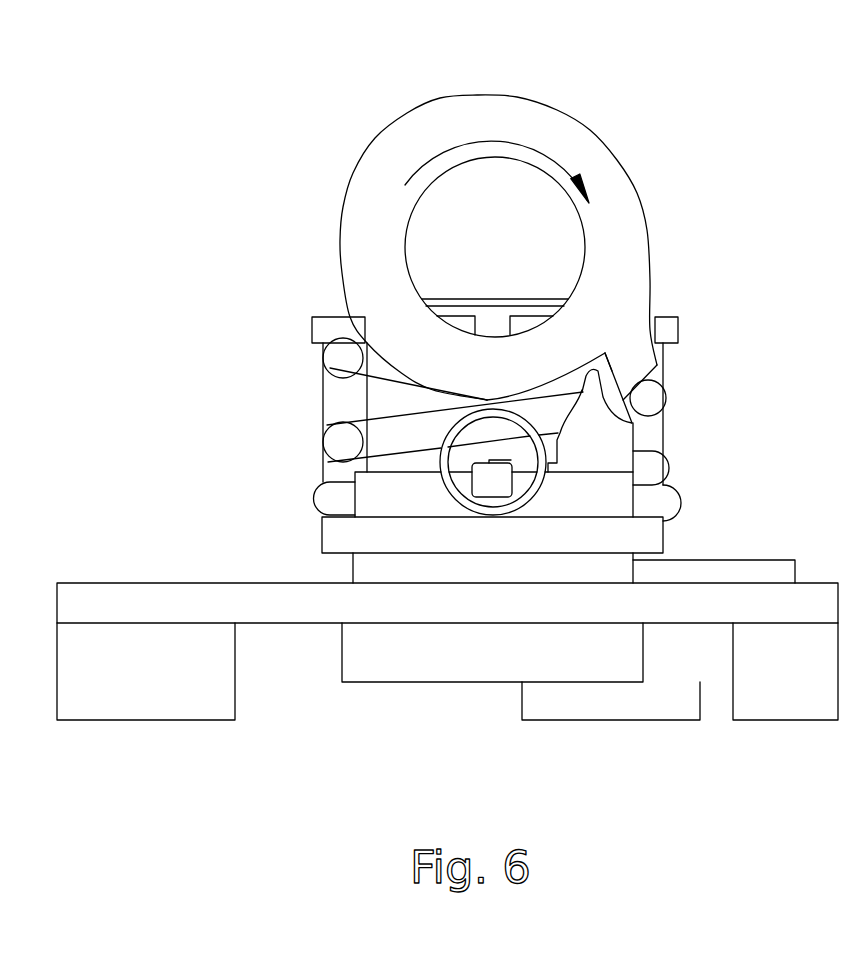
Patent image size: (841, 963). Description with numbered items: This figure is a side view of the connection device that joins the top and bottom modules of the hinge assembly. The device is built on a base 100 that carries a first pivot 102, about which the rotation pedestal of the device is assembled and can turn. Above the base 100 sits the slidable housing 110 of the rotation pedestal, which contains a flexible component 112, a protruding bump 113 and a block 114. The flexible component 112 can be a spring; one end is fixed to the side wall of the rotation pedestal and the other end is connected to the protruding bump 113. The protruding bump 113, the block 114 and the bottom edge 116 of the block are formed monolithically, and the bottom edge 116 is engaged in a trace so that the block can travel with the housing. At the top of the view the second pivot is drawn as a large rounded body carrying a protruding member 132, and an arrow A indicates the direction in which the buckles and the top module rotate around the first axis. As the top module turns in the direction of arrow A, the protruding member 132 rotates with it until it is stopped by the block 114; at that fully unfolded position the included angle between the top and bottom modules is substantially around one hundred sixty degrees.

The arrow A is at (500, 142).
The base 100 is at (432, 607).
The first pivot 102 is at (384, 401).
The slidable housing 110 is at (388, 500).
The flexible component 112 is at (505, 505).
The protruding bump 113 is at (492, 482).
The block 114 is at (632, 423).
The bottom edge 116 is at (598, 573).
The protruding member 132 is at (633, 362).